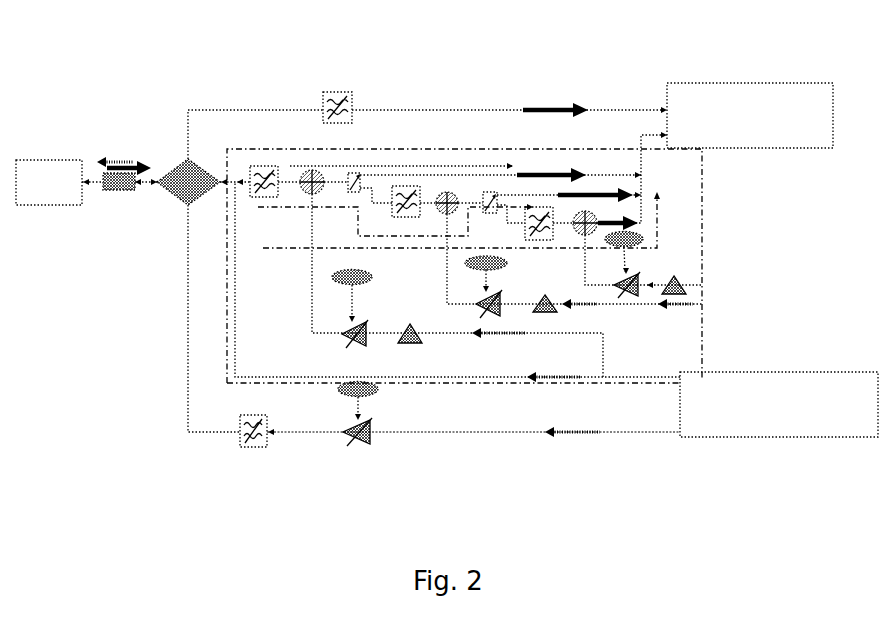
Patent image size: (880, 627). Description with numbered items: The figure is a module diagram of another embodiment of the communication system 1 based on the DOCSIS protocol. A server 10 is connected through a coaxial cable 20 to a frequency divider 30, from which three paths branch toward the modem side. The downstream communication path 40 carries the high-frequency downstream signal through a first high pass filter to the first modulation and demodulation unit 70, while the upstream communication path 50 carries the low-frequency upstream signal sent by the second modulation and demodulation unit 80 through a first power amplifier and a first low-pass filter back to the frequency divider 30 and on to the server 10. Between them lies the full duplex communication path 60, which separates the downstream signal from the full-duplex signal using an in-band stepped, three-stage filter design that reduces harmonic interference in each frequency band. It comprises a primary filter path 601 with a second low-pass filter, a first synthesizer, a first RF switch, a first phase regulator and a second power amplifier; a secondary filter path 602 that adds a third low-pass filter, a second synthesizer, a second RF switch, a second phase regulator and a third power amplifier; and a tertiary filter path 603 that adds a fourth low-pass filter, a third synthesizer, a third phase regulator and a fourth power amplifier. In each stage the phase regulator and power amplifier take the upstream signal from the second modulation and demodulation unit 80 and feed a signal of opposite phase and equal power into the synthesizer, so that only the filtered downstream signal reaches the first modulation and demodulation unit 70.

The communication system 1 is at (434, 56).
The server 10 is at (50, 158).
The coaxial cable 20 is at (133, 160).
The frequency divider 30 is at (203, 170).
The downstream communication path 40 is at (244, 105).
The upstream communication path 50 is at (190, 428).
The full duplex communication path 60 is at (464, 249).
The first modulation and demodulation unit 70 is at (697, 83).
The second modulation and demodulation unit 80 is at (745, 372).
The primary filter path 601 is at (401, 159).
The secondary filter path 602 is at (395, 220).
The tertiary filter path 603 is at (461, 220).